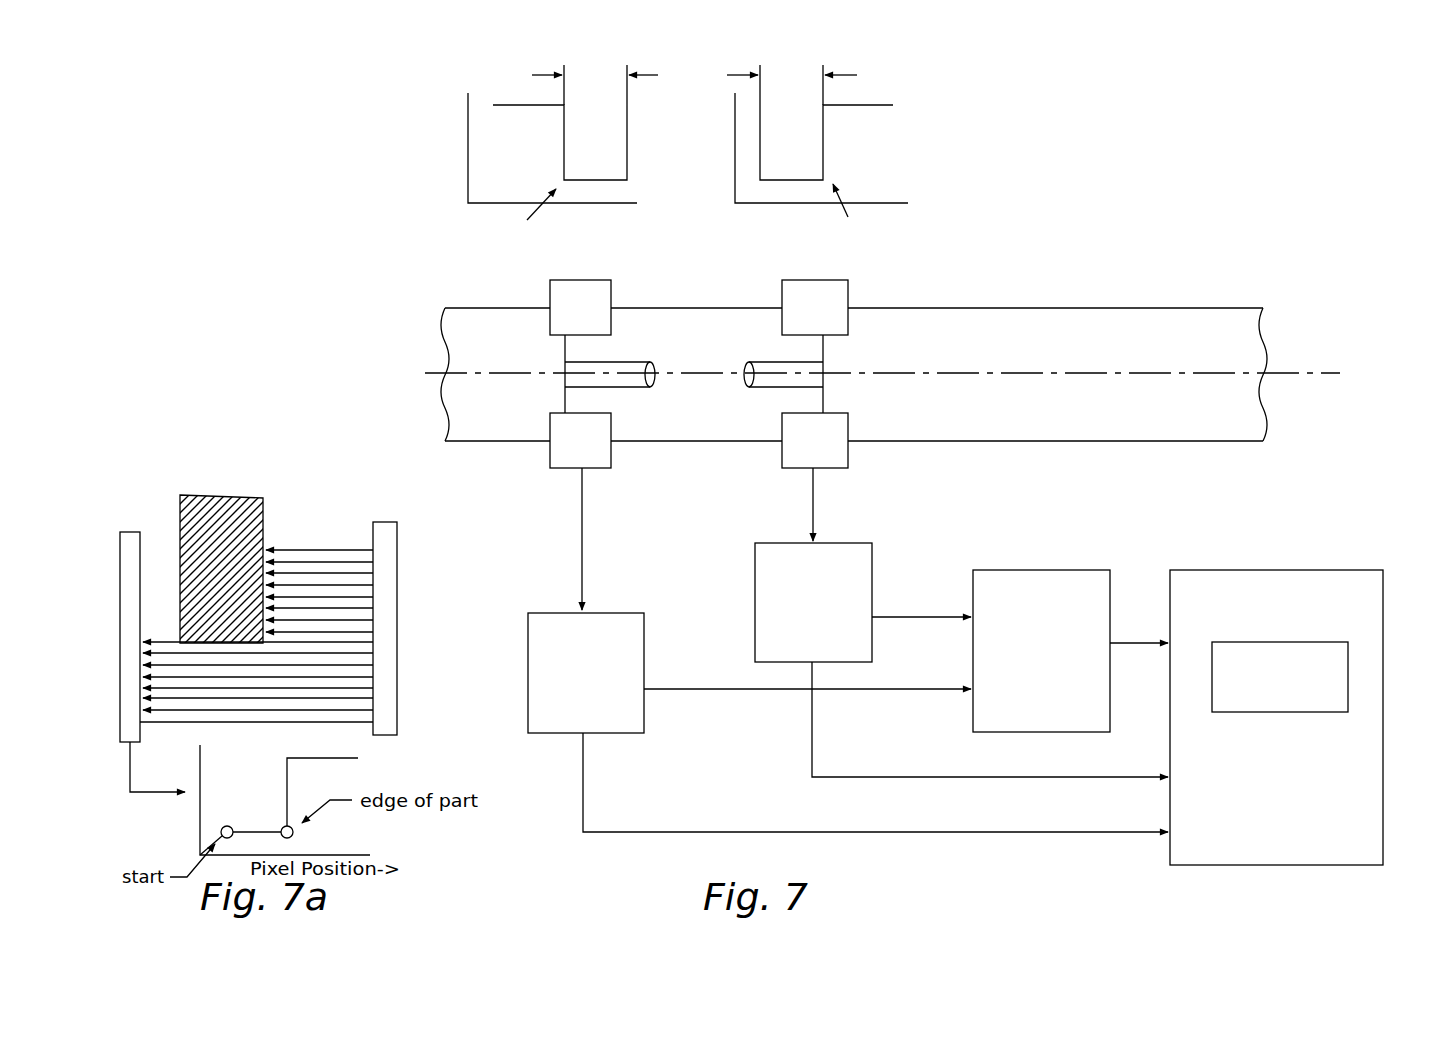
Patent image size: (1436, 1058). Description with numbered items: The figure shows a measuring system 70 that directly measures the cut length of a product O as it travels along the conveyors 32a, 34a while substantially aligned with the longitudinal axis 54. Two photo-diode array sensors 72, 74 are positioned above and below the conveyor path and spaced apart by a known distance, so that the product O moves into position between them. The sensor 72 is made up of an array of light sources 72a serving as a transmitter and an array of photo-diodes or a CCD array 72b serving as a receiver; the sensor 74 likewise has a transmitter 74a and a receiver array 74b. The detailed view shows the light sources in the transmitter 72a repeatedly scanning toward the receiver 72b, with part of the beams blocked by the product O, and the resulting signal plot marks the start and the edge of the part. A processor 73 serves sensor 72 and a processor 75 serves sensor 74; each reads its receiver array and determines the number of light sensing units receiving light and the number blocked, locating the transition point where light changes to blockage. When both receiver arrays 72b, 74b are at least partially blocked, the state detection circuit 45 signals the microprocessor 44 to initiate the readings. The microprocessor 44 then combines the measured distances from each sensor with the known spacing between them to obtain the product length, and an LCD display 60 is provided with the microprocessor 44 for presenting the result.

In FIG. 7, the measuring system 70 is at (1090, 173).
In FIG. 7, the conveyor 32a is at (497, 320).
In FIG. 7, the conveyor 34a is at (500, 425).
In FIG. 7, the longitudinal axis 54 is at (1320, 373).
In FIG. 7, the product O is at (622, 351).
In FIG. 7A, the product O is at (269, 517).
In FIG. 7, the photo-diode array sensor 74 is at (606, 479).
In FIG. 7, the array of light sources 74a is at (598, 302).
In FIG. 7, the receiver array 74b is at (598, 434).
In FIG. 7, the photo-diode array sensor 72 is at (873, 478).
In FIG. 7, the array of light sources 72a is at (792, 271).
In FIG. 7A, the array of light sources 72a is at (418, 571).
In FIG. 7, the array of photo-diodes or CCD array 72b is at (795, 475).
In FIG. 7A, the array of photo-diodes or CCD array 72b is at (127, 517).
In FIG. 7, the processor 75 is at (526, 647).
In FIG. 7, the processor 73 is at (752, 572).
In FIG. 7, the state detection circuit 45 is at (998, 732).
In FIG. 7, the microprocessor 44 is at (1385, 760).
In FIG. 7, the LCD display 60 is at (1267, 713).